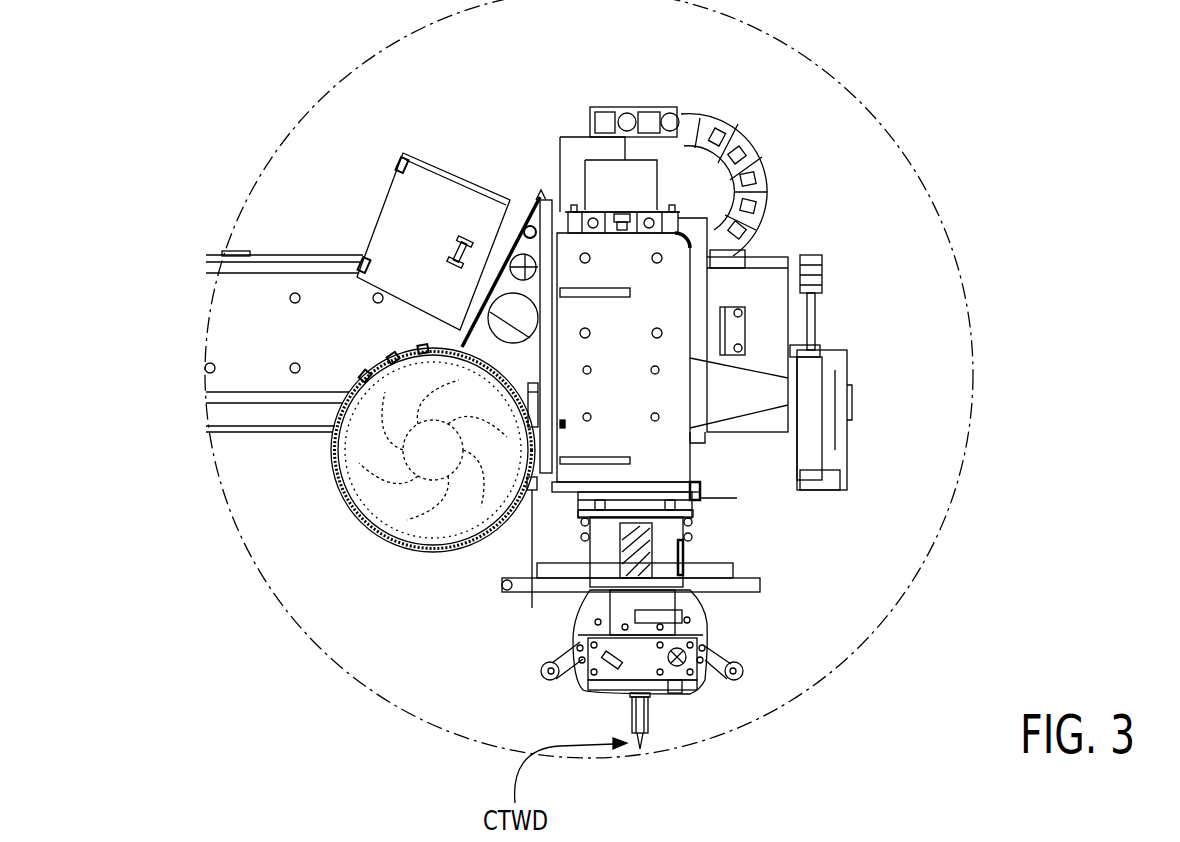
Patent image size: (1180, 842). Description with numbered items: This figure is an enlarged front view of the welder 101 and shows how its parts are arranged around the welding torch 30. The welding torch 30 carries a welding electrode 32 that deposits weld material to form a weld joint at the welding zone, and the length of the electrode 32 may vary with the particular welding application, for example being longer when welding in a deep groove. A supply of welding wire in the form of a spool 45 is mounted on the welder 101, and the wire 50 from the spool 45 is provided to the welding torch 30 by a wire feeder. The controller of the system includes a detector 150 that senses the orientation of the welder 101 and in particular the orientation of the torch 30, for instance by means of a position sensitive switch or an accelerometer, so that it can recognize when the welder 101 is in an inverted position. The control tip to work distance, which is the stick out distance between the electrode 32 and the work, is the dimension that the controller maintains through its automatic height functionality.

The spool 45 is at (362, 477).
The welder 101 is at (566, 642).
The detector 150 is at (707, 620).
The welding electrode 32 is at (640, 733).
The welding torch 30 is at (657, 718).
The wire 50 is at (641, 741).